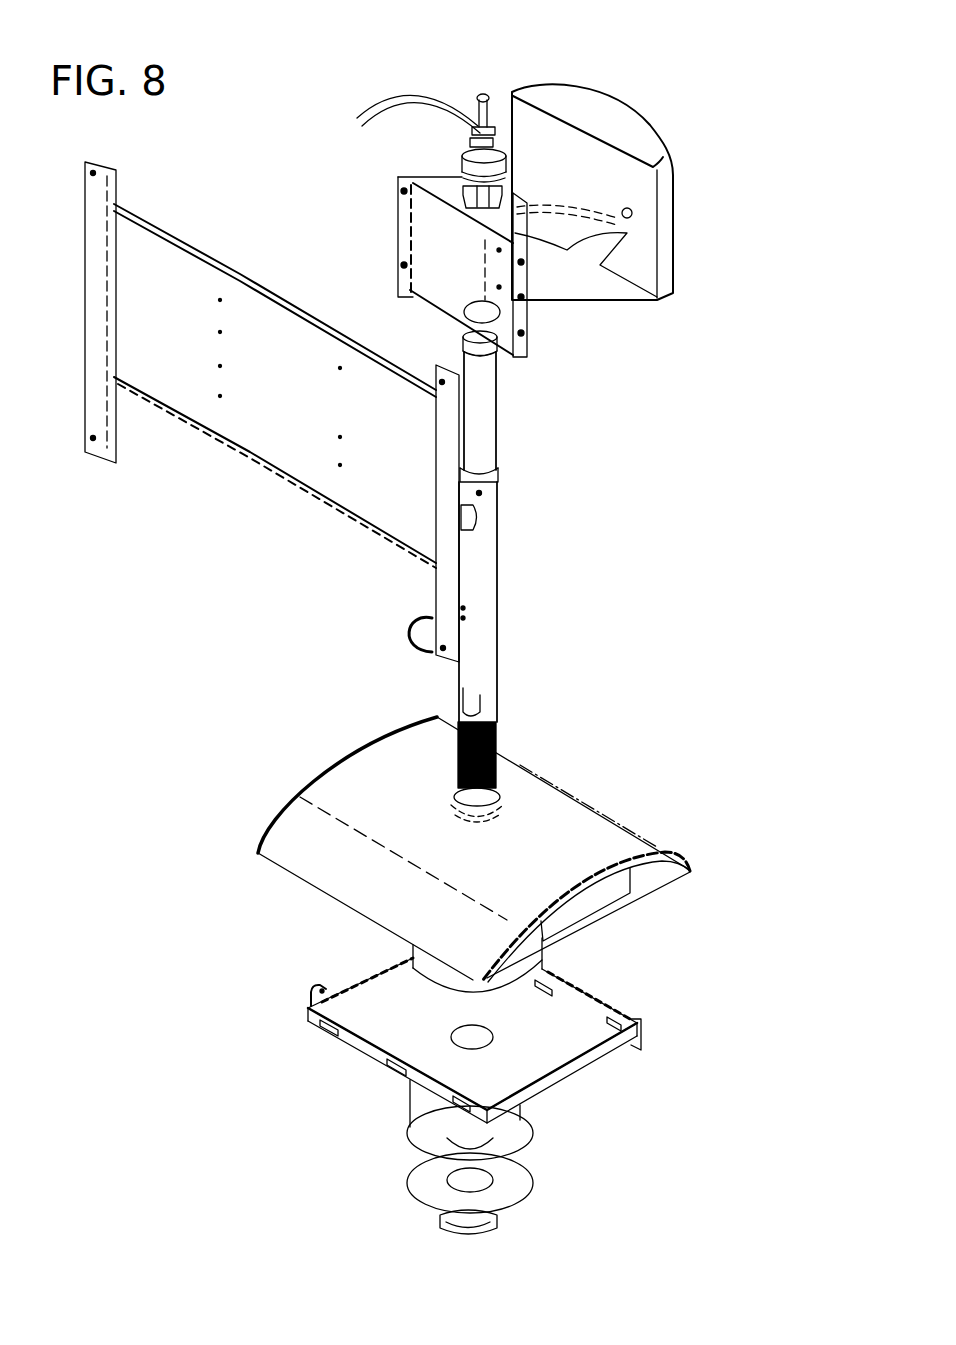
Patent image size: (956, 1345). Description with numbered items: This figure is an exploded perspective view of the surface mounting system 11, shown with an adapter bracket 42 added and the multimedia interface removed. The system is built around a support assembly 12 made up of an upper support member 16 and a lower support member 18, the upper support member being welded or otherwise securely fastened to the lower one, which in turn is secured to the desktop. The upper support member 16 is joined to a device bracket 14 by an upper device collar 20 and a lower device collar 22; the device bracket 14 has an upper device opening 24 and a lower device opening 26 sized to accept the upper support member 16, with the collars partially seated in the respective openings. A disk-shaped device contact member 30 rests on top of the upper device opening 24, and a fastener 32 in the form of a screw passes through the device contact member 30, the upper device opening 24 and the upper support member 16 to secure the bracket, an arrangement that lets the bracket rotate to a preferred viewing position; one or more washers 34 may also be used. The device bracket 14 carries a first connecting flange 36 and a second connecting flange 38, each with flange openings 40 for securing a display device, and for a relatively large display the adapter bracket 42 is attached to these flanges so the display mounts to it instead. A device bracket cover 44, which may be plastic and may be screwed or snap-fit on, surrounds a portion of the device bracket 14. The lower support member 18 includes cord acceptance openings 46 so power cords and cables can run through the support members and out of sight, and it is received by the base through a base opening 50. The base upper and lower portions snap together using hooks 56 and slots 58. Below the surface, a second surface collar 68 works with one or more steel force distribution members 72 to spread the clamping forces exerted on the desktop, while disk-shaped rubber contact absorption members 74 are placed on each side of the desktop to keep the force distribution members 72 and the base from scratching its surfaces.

The surface mounting system 11 is at (531, 58).
The support assembly 12 is at (475, 620).
The device bracket 14 is at (527, 340).
The upper support member 16 is at (487, 427).
The lower support member 18 is at (483, 558).
The upper device collar 20 is at (461, 163).
The lower device collar 22 is at (464, 332).
The upper device opening 24 is at (509, 188).
The lower device opening 26 is at (460, 307).
The device contact member 30 is at (473, 142).
The fastener 32 is at (480, 96).
The washers 34 is at (406, 120).
The first connecting flange 36 is at (402, 279).
The second connecting flange 38 is at (523, 296).
The flange openings 40 is at (404, 191).
The adapter bracket 42 is at (238, 452).
The device bracket cover 44 is at (672, 293).
The cord acceptance openings 46 is at (462, 503).
The base opening 50 is at (497, 775).
The hooks 56 is at (316, 982).
The slots 58 is at (303, 1015).
The second surface collar 68 is at (450, 1227).
The force distribution members 72 is at (517, 993).
The contact absorption members 74 is at (408, 1143).